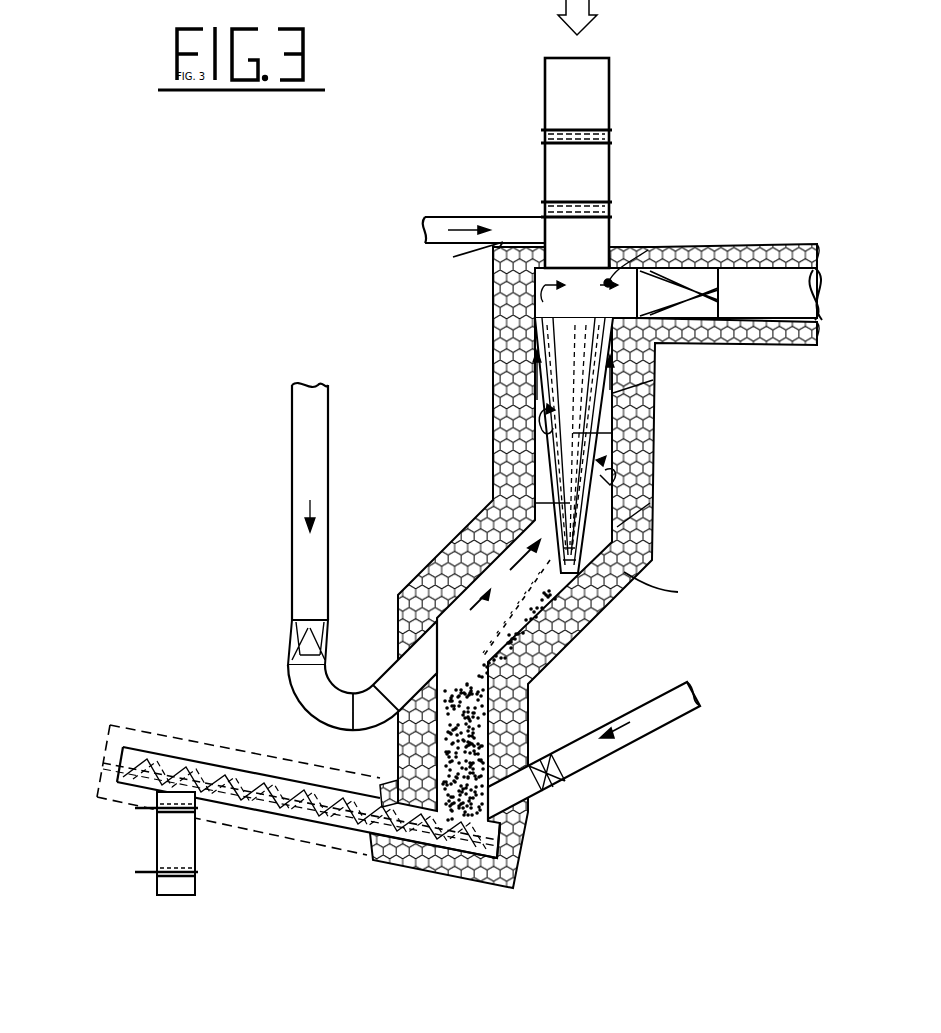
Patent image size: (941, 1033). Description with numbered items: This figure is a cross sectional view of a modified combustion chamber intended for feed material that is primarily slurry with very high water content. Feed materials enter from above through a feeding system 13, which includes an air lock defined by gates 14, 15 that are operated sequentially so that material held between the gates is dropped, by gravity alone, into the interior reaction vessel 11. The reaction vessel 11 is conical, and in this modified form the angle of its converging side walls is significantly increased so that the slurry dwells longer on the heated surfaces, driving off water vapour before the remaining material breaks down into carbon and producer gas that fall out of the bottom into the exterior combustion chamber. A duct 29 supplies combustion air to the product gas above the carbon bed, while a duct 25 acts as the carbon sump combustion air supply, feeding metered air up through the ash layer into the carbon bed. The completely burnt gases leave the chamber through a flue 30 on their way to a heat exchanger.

The reaction vessel 11 is at (553, 468).
The feeding system 13 is at (528, 124).
The gate 14 is at (612, 138).
The gate 15 is at (612, 208).
The duct 25 is at (667, 707).
The duct 29 is at (305, 430).
The flue 30 is at (800, 312).